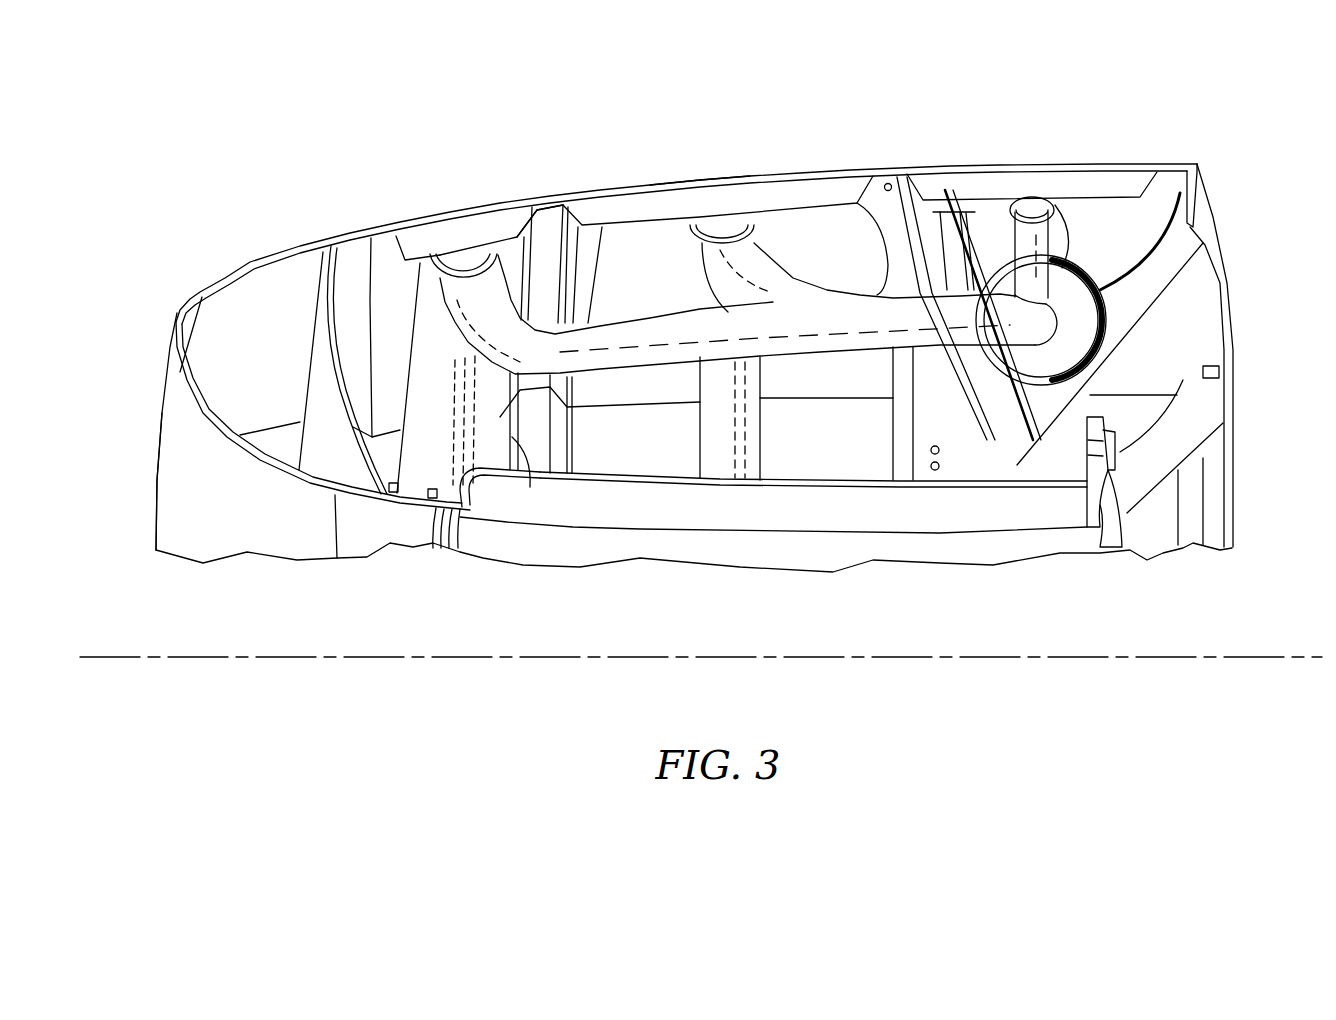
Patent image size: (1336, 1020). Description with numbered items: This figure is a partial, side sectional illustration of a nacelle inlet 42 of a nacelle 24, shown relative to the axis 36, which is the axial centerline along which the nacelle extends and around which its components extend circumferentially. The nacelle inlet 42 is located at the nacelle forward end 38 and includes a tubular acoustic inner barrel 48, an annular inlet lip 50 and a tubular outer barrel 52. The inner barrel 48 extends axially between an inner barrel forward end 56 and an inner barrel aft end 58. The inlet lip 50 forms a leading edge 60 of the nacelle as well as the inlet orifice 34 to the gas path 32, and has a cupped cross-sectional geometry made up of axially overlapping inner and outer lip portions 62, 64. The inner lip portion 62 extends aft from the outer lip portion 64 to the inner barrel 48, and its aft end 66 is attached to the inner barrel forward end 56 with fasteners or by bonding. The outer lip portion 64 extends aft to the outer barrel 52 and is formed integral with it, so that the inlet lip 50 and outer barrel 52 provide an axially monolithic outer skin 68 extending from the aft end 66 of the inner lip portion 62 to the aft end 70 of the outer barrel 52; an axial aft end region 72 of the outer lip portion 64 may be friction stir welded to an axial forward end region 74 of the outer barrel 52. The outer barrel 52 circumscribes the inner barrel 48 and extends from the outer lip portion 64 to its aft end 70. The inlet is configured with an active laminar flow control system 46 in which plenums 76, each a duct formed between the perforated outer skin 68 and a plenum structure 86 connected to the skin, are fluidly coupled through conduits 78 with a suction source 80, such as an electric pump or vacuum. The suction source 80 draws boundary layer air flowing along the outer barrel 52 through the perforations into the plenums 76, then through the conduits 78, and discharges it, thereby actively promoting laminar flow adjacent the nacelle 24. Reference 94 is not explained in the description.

The nacelle 24 is at (372, 118).
The gas path 32 is at (556, 624).
The inlet orifice 34 is at (176, 532).
The axis 36 is at (216, 660).
The nacelle forward end 38 is at (173, 330).
The nacelle inlet 42 is at (320, 205).
The active laminar flow control (ALFC) system 46 is at (840, 385).
The tubular acoustic inner barrel 48 is at (657, 553).
The annular inlet lip 50 is at (142, 480).
The tubular outer barrel 52 is at (809, 160).
The inner barrel forward end 56 is at (412, 504).
The inner barrel aft end 58 is at (1100, 503).
The leading edge 60 is at (183, 392).
The inner lip portion 62 is at (277, 470).
The outer lip portion 64 is at (268, 250).
The aft end of the inner lip portion 66 is at (462, 553).
The axially monolithic outer skin 68 is at (440, 210).
The aft end of the outer barrel 70 is at (1210, 168).
The axial aft end region of the outer lip portion 72 is at (525, 182).
The axial forward end region of the outer barrel 74 is at (562, 185).
The plenum 76 is at (1153, 262).
The conduit 78 is at (542, 336).
The suction source 80 is at (1092, 350).
The plenum structure 86 is at (385, 232).
The upper surface 94 is at (690, 180).